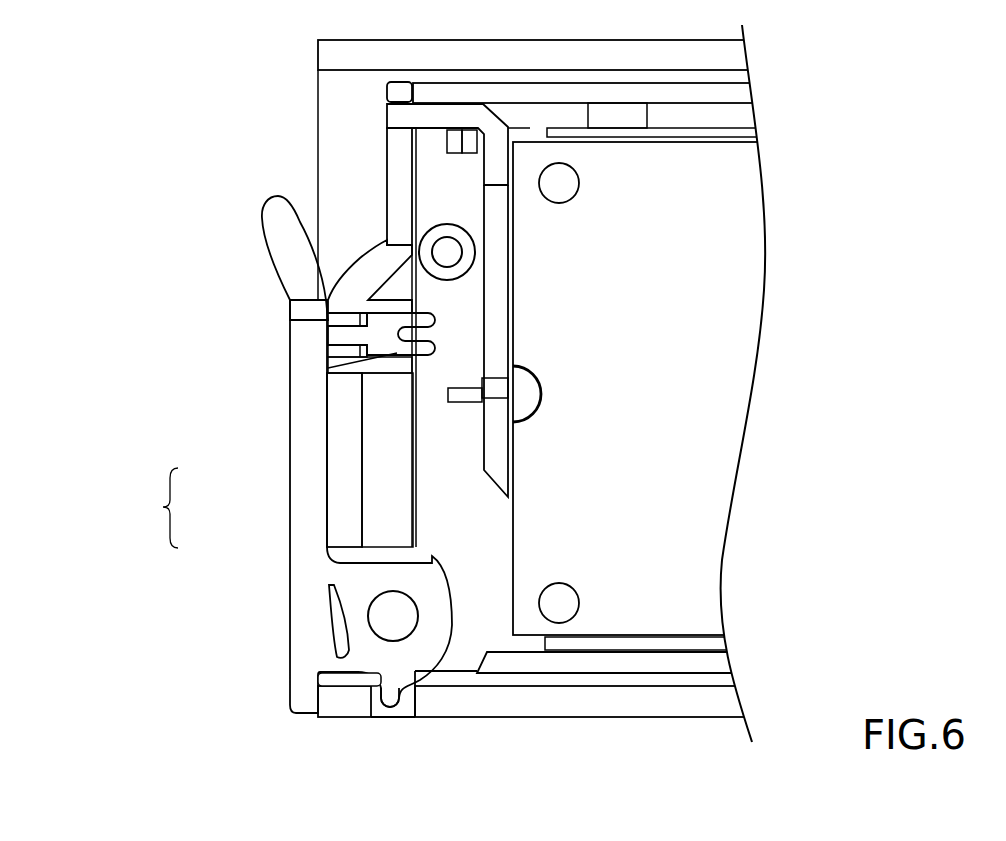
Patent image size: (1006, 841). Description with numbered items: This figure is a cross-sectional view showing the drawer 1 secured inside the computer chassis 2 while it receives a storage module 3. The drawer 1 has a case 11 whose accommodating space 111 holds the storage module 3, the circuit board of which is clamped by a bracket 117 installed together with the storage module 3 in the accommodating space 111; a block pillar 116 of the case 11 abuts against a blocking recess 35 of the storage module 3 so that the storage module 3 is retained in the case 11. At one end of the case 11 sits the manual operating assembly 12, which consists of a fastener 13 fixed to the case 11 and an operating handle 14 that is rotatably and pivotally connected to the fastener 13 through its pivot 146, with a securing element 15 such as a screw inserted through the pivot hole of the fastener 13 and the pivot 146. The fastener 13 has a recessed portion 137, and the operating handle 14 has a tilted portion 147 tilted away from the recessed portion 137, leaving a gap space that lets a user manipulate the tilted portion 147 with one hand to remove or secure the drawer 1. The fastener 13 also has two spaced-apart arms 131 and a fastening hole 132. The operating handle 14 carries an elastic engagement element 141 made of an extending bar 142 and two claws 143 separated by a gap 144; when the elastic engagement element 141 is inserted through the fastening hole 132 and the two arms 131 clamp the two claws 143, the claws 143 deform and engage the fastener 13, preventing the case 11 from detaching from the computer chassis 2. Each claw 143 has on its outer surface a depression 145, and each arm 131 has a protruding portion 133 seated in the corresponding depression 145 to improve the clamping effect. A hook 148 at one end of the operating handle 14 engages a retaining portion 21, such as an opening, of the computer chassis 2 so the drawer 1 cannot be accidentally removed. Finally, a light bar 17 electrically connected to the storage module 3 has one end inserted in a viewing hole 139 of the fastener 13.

The drawer 1 is at (196, 171).
The computer chassis 2 is at (542, 702).
The storage module 3 is at (695, 447).
The case 11 is at (662, 673).
The manual operating assembly 12 is at (156, 508).
The fastener 13 is at (350, 500).
The operating handle 14 is at (305, 477).
The securing element 15 is at (395, 615).
The light bar 17 is at (402, 118).
The retaining portion 21 is at (407, 708).
The blocking recess 35 is at (513, 365).
The accommodating space 111 is at (722, 118).
The block pillar 116 is at (527, 395).
The bracket 117 is at (707, 132).
The arm 131 is at (365, 275).
The fastening hole 132 is at (347, 318).
The protruding portion 133 is at (403, 300).
The recessed portion 137 is at (368, 168).
The viewing hole 139 is at (398, 100).
The elastic engagement element 141 is at (349, 355).
The extending bar 142 is at (348, 344).
The claw 143 is at (432, 360).
The gap 144 is at (428, 337).
The depression 145 is at (405, 370).
The pivot 146 is at (350, 620).
The tilted portion 147 is at (275, 222).
The hook 148 is at (383, 693).